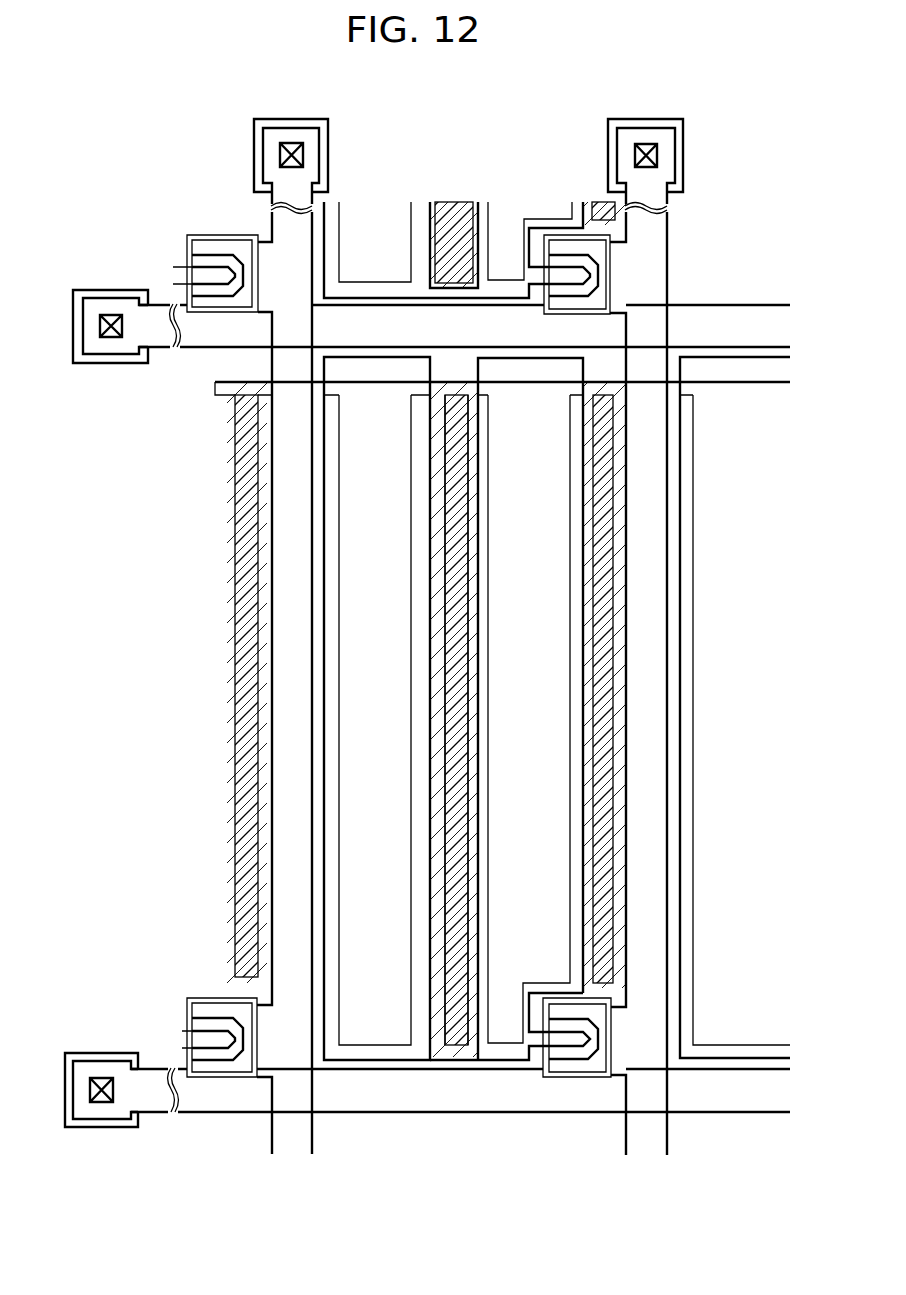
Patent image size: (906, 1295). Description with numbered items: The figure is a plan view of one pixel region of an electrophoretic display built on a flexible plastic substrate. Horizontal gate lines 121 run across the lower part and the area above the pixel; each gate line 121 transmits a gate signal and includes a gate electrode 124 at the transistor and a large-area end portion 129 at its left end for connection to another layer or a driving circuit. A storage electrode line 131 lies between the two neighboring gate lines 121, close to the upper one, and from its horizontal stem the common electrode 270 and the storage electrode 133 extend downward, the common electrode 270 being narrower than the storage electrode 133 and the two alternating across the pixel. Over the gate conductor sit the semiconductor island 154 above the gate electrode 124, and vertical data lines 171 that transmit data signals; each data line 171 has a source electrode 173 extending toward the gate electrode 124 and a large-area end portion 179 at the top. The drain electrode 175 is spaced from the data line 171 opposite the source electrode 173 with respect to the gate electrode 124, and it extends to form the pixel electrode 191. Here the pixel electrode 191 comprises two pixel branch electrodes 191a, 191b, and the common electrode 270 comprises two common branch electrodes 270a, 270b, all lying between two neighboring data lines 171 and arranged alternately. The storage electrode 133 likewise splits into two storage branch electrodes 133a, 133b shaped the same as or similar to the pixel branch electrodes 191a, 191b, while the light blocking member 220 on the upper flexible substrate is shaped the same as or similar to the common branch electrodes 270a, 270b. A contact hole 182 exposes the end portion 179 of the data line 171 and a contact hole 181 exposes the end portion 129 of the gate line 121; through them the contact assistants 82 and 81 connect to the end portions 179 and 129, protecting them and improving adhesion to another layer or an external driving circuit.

The contact assistant 82 is at (328, 150).
The end portion of data line 179 is at (263, 146).
The contact hole 182 is at (292, 143).
The contact assistant 81 is at (73, 338).
The end portion of gate line 129 is at (117, 297).
The contact hole 181 is at (105, 313).
The gate line 121 is at (357, 305).
The data line 171 is at (272, 423).
The gate electrode 124 is at (597, 998).
The semiconductor island 154 is at (578, 1077).
The source electrode 173 is at (553, 1005).
The drain electrode 175 is at (535, 1068).
The pixel electrode 191 is at (453, 587).
The pixel branch electrode 191a is at (390, 357).
The pixel branch electrode 191b is at (505, 357).
The storage electrode line 131 is at (757, 382).
The storage electrode 133 is at (295, 623).
The storage branch electrode 133a is at (338, 567).
The storage branch electrode 133b is at (488, 488).
The light blocking member 220 is at (437, 742).
The common electrode 270 is at (626, 623).
The common branch electrode 270a is at (445, 578).
The common branch electrode 270b is at (613, 485).